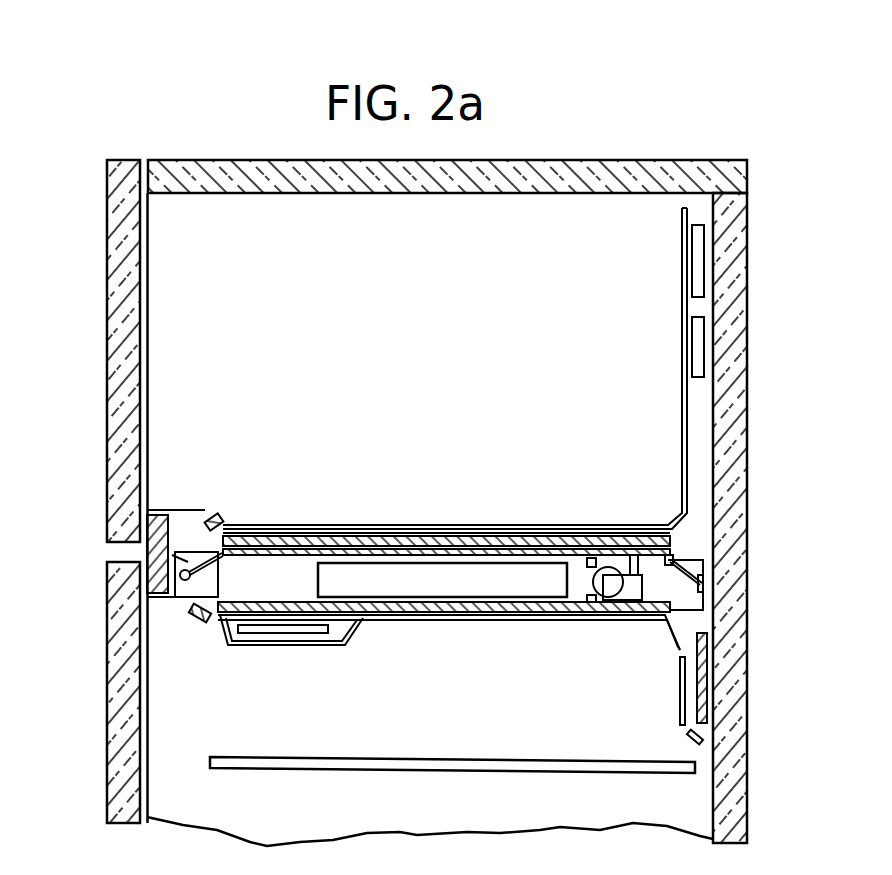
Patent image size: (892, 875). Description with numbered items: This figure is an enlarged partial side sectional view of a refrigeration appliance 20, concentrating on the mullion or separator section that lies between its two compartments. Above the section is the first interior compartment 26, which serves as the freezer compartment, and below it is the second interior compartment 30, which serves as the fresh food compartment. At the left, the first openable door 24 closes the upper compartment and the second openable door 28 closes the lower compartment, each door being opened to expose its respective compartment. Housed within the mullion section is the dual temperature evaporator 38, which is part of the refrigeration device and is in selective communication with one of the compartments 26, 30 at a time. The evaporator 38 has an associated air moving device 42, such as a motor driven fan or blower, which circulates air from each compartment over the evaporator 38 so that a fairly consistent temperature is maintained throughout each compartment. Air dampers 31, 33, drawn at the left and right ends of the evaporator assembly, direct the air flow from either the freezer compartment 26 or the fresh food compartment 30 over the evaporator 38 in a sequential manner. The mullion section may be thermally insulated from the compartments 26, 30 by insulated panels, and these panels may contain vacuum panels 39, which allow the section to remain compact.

The refrigeration appliance 20 is at (745, 300).
The first openable door 24 is at (110, 392).
The first interior compartment 26 is at (163, 243).
The second openable door 28 is at (105, 653).
The second interior compartment 30 is at (165, 713).
The air damper 31 is at (167, 553).
The air damper 33 is at (692, 600).
The evaporator 38 is at (477, 587).
The vacuum panels 39 is at (568, 615).
The air moving device 42 is at (622, 583).